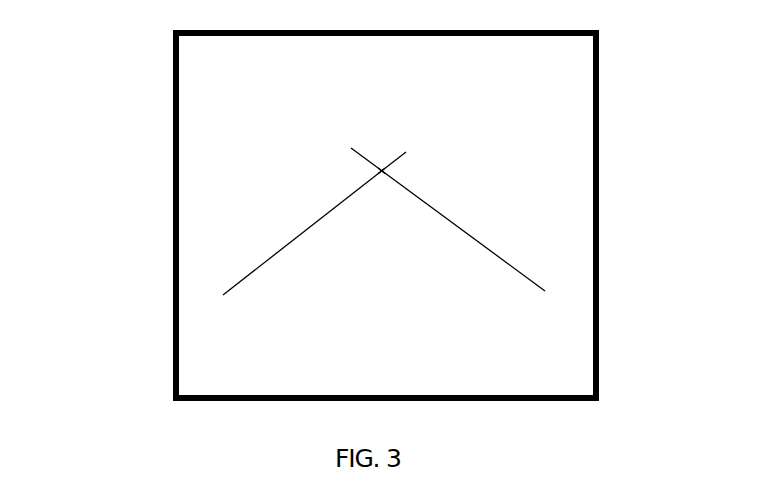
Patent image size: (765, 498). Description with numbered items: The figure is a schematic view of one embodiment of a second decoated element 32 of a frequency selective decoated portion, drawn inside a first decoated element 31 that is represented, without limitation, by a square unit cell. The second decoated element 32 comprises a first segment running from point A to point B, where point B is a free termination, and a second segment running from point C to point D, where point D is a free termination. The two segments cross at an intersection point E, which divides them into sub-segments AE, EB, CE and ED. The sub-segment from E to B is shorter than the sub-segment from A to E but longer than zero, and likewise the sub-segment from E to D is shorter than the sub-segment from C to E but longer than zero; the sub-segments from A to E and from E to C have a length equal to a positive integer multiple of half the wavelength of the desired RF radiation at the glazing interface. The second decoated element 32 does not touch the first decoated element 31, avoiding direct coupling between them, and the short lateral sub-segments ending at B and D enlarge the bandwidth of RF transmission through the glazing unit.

The first decoated element 31 is at (598, 135).
The second decoated element 32 is at (315, 188).
The point A is at (290, 236).
The point B is at (404, 151).
The point C is at (477, 238).
The point D is at (357, 150).
The intersection point E is at (380, 189).